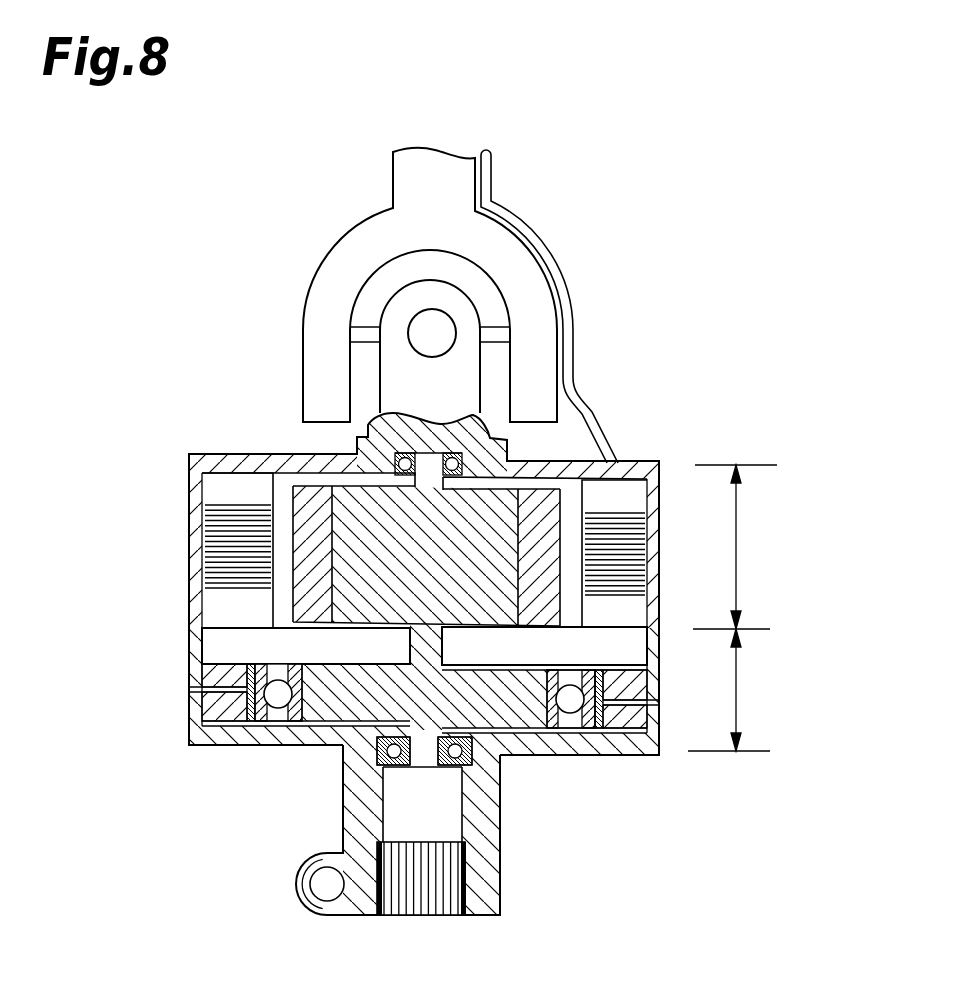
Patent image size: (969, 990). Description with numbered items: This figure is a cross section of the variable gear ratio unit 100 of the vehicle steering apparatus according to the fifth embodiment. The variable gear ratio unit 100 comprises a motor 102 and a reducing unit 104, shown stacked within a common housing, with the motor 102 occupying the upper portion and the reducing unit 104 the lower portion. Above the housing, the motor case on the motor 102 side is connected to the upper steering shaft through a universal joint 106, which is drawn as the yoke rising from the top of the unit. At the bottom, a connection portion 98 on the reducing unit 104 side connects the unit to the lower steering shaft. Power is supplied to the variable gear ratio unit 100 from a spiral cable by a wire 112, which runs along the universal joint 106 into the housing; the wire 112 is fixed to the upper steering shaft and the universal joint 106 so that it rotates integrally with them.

The connection portion 98 is at (500, 868).
The variable gear ratio unit 100 is at (643, 395).
The motor 102 is at (736, 515).
The reducing unit 104 is at (736, 665).
The universal joint 106 is at (440, 172).
The wire 112 is at (573, 252).